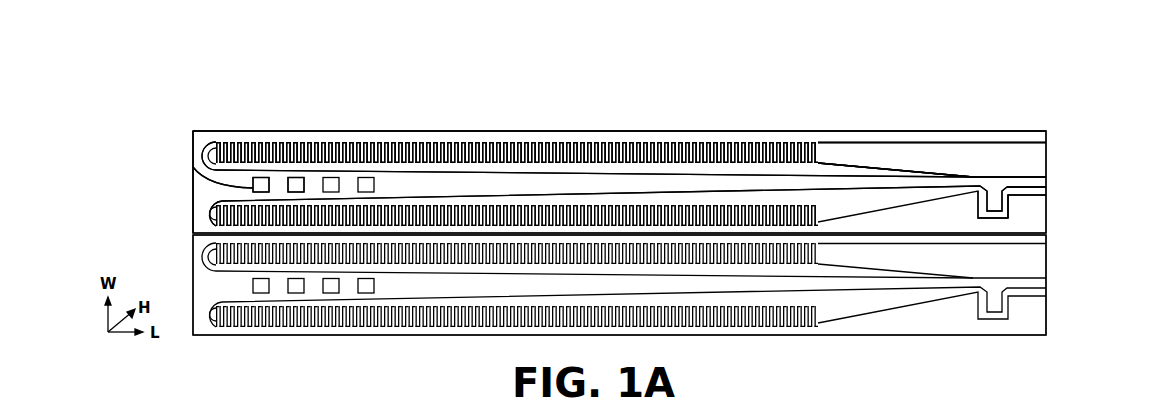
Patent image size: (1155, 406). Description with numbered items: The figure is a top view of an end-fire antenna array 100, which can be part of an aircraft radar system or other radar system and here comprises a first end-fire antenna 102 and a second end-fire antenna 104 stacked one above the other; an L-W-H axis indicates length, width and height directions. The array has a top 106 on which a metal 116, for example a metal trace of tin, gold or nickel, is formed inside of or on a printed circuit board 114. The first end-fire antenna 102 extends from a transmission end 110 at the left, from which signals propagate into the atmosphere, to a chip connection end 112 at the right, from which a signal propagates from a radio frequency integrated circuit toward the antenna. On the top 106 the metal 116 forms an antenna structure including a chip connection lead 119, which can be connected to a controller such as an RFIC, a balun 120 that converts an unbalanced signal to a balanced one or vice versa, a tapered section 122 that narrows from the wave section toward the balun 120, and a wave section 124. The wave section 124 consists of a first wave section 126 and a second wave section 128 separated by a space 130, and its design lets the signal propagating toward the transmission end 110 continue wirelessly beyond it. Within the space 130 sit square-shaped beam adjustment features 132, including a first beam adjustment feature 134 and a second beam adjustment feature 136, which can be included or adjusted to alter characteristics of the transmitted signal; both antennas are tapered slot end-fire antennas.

The end-fire antenna array 100 is at (692, 88).
The first end-fire antenna 102 is at (1047, 218).
The second end-fire antenna 104 is at (1047, 310).
The top 106 is at (897, 131).
The transmission end 110 is at (194, 212).
The chip connection end 112 is at (1047, 157).
The printed circuit board 114 is at (1020, 142).
The metal 116 is at (1047, 185).
The chip connection lead 119 is at (1033, 194).
The balun 120 is at (975, 194).
The tapered section 122 is at (832, 142).
The wave section 124 is at (643, 142).
The first wave section 126 is at (593, 142).
The second wave section 128 is at (557, 205).
The space 130 is at (497, 187).
The beam adjustment features 132 is at (194, 169).
The first beam adjustment feature 134 is at (261, 178).
The second beam adjustment feature 136 is at (299, 178).